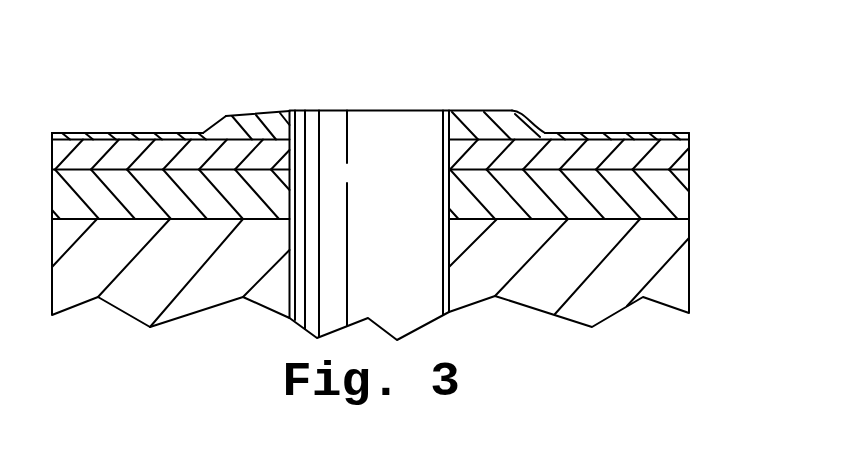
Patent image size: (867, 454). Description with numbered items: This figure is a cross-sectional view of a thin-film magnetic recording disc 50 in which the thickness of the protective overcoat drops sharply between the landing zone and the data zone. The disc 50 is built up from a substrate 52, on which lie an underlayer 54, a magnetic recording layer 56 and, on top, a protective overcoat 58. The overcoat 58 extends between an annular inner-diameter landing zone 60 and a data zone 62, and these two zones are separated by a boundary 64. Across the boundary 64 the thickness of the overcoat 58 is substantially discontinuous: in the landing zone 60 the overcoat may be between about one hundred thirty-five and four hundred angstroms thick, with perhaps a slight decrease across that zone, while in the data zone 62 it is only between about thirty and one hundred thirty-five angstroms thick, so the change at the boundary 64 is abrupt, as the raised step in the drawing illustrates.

The magnetic recording disc 50 is at (89, 104).
The substrate 52 is at (409, 273).
The underlayer 54 is at (685, 202).
The magnetic recording layer 56 is at (688, 155).
The protective overcoat 58 is at (690, 133).
The inner-diameter landing zone 60 is at (258, 122).
The data zone 62 is at (126, 133).
The boundary 64 is at (208, 119).